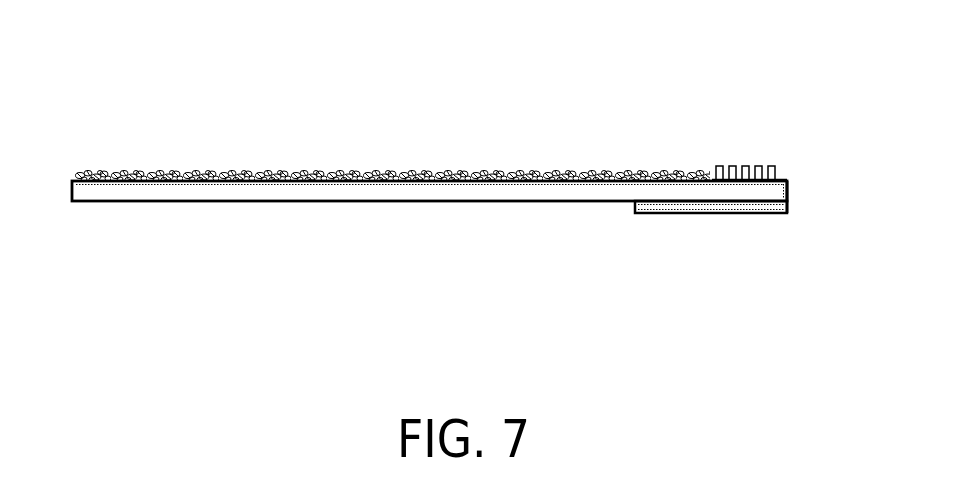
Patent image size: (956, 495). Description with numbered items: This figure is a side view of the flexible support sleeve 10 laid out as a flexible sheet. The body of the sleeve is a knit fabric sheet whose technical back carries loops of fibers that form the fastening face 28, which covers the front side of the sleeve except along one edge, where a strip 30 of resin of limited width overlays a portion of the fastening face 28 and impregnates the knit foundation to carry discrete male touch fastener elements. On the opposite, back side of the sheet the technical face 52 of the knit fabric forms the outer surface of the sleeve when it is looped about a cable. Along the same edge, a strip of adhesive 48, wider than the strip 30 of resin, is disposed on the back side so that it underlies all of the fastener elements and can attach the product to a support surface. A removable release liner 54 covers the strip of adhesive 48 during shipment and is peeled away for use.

The flexible support sleeve 10 is at (498, 115).
The fastening face 28 is at (227, 175).
The strip of resin 30 is at (745, 163).
The strip of adhesive 48 is at (788, 203).
The technical face 52 is at (143, 202).
The removable release liner 54 is at (752, 213).